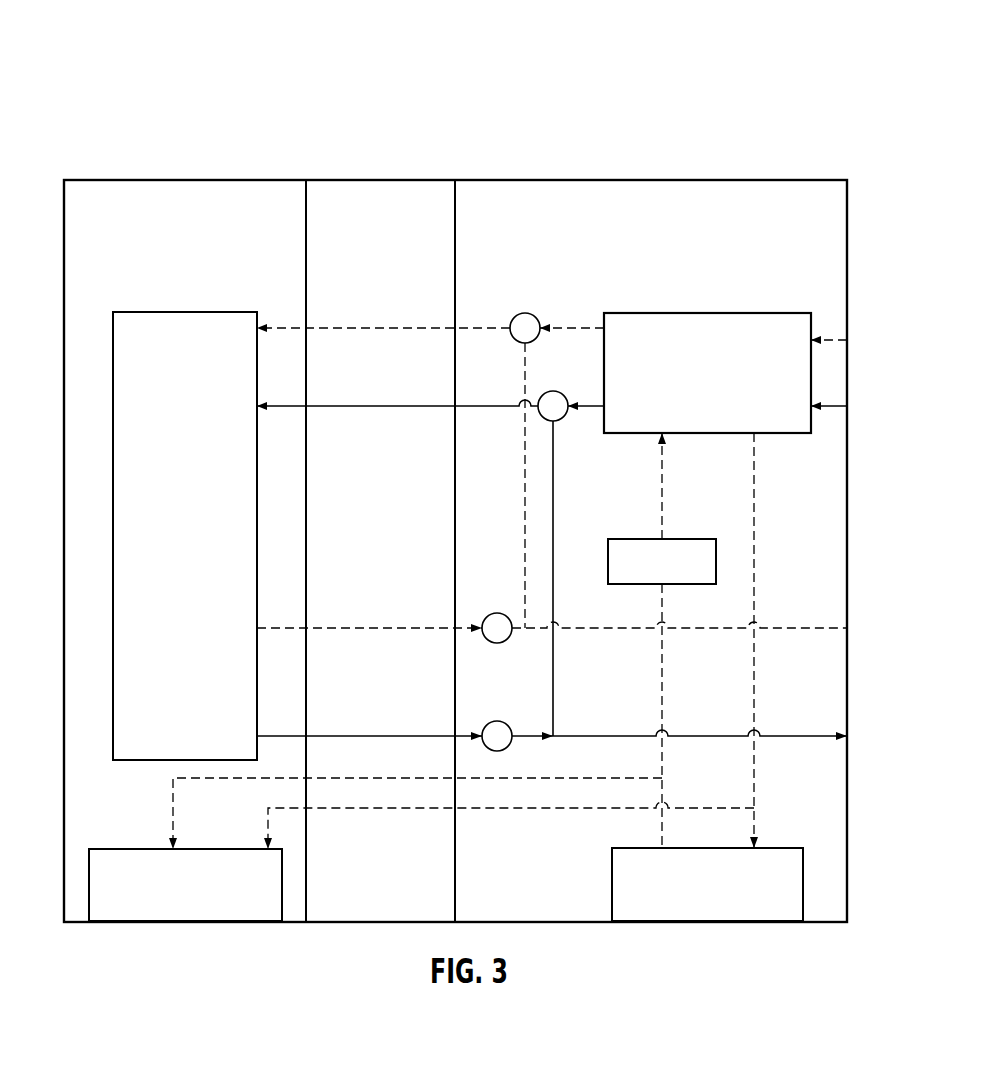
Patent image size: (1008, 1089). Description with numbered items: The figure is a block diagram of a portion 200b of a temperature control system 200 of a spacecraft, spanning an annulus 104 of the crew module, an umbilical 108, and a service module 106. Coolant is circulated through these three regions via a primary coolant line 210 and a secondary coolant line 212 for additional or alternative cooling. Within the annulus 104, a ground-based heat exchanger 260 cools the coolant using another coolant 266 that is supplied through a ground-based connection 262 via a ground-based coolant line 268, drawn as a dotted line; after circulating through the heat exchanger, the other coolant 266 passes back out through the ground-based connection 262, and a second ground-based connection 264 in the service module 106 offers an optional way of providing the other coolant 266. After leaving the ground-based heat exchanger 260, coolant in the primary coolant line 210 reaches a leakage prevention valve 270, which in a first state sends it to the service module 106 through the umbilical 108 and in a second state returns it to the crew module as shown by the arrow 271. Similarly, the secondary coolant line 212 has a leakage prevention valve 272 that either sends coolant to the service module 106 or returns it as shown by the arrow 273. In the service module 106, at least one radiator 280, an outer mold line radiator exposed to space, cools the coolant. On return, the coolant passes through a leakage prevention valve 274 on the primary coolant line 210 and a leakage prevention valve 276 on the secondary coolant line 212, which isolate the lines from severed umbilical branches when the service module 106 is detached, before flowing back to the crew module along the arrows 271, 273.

The temperature control system 200 is at (114, 34).
The portion of the temperature control system 200b is at (170, 116).
The annulus 104 is at (820, 180).
The service module 106 is at (125, 180).
The umbilical 108 is at (358, 180).
The primary coolant line 210 is at (378, 404).
The secondary coolant line 212 is at (392, 326).
The ground-based heat exchanger 260 is at (642, 313).
The ground-based connection 262 is at (633, 848).
The second ground-based connection 264 is at (140, 849).
The other coolant 266 is at (637, 539).
The ground-based coolant line 268 is at (663, 490).
The leakage prevention valve 270 is at (553, 391).
The arrow 271 is at (804, 736).
The leakage prevention valve 272 is at (525, 313).
The arrow 273 is at (804, 628).
The leakage prevention valve 274 is at (497, 721).
The leakage prevention valve 276 is at (497, 613).
The radiator 280 is at (165, 312).